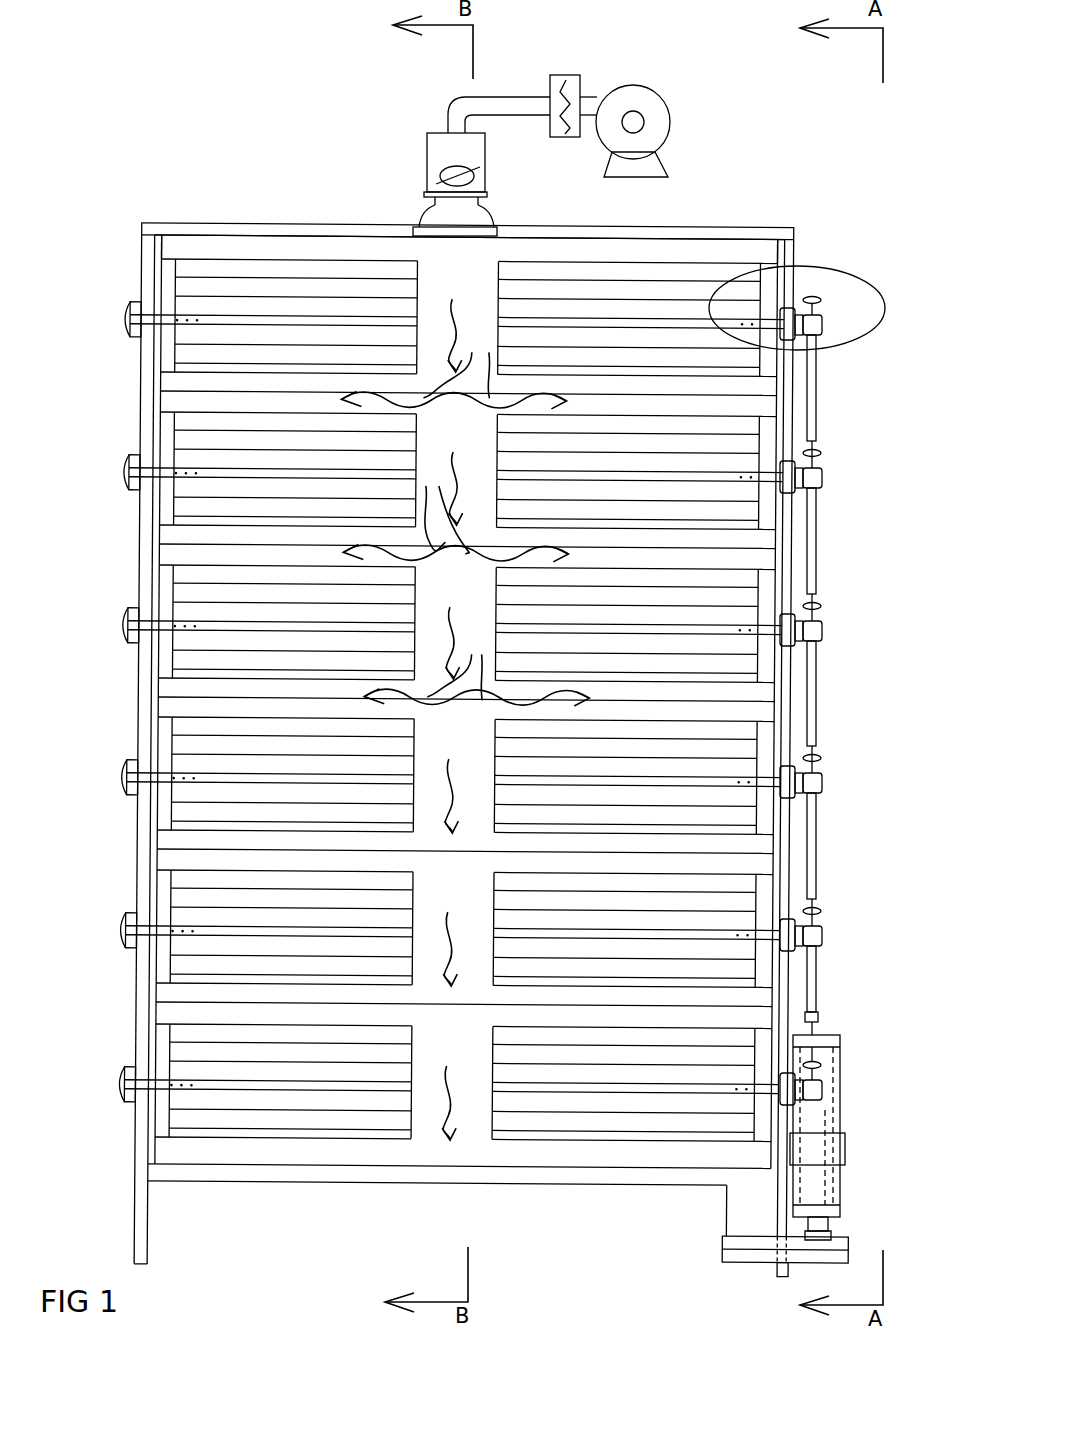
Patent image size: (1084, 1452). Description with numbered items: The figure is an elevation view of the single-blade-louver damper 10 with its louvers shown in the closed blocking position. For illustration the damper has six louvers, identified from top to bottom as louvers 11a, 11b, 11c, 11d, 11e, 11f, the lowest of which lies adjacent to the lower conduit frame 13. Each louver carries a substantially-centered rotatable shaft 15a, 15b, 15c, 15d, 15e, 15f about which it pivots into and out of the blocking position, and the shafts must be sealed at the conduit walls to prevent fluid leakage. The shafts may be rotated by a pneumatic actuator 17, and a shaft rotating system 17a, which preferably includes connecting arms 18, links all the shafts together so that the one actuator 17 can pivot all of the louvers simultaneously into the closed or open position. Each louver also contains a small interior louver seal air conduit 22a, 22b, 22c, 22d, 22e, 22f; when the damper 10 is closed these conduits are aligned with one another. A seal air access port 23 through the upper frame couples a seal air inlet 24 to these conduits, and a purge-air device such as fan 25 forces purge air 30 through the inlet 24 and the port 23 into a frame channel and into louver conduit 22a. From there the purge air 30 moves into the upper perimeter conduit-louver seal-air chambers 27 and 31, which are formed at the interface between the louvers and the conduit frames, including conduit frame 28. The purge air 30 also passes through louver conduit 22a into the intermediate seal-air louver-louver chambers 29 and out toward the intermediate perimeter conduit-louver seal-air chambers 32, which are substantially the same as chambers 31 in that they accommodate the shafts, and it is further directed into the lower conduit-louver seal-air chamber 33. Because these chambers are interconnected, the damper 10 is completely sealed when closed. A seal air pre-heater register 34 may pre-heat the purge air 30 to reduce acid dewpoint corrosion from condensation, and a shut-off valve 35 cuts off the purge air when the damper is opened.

The single-blade-louver damper 10 is at (190, 115).
The louver 11a is at (180, 360).
The louver 11b is at (178, 510).
The louver 11c is at (178, 660).
The louver 11d is at (178, 810).
The louver 11e is at (178, 964).
The louver 11f is at (178, 1125).
The lower conduit frame 13 is at (372, 1171).
The rotatable shaft 15a is at (120, 321).
The rotatable shaft 15b is at (120, 474).
The rotatable shaft 15c is at (120, 626).
The rotatable shaft 15d is at (120, 778).
The rotatable shaft 15e is at (120, 931).
The rotatable shaft 15f is at (120, 1085).
The actuator 17 is at (840, 1110).
The shaft rotating system 17a is at (856, 346).
The connecting arm 18 is at (818, 432).
The interior louver seal air conduit 22a is at (462, 291).
The interior louver seal air conduit 22b is at (462, 444).
The interior louver seal air conduit 22c is at (462, 597).
The interior louver seal air conduit 22d is at (462, 749).
The interior louver seal air conduit 22e is at (462, 902).
The interior louver seal air conduit 22f is at (462, 1056).
The seal air access port 23 is at (425, 232).
The seal air inlet 24 is at (480, 212).
The fan 25 is at (672, 116).
The upper perimeter conduit-louver seal-air chamber 27 is at (248, 250).
The conduit frame 28 is at (143, 245).
The intermediate seal-air louver-louver chamber 29 is at (162, 403).
The purge air 30 is at (448, 342).
The upper perimeter conduit-louver seal-air chamber 31 is at (165, 278).
The intermediate perimeter conduit-louver seal-air chamber 32 is at (160, 357).
The lower conduit-louver seal-air chamber 33 is at (232, 1156).
The seal air pre-heater register 34 is at (564, 75).
The shut-off valve 35 is at (470, 184).